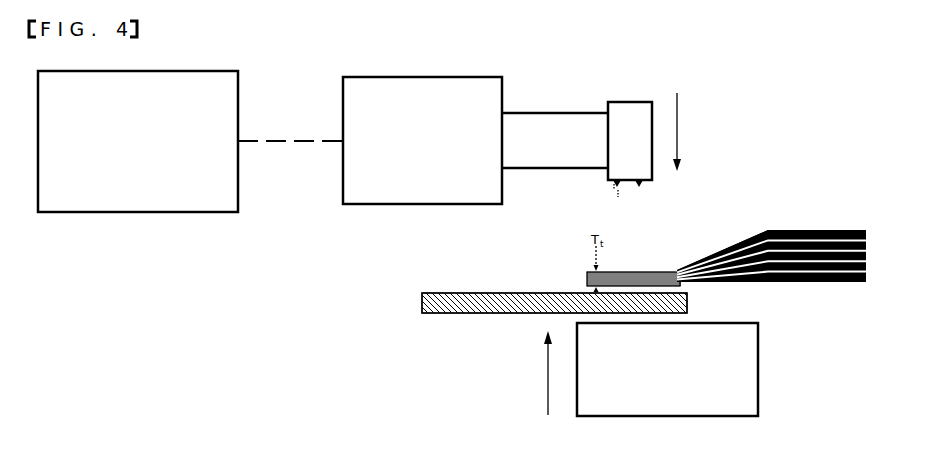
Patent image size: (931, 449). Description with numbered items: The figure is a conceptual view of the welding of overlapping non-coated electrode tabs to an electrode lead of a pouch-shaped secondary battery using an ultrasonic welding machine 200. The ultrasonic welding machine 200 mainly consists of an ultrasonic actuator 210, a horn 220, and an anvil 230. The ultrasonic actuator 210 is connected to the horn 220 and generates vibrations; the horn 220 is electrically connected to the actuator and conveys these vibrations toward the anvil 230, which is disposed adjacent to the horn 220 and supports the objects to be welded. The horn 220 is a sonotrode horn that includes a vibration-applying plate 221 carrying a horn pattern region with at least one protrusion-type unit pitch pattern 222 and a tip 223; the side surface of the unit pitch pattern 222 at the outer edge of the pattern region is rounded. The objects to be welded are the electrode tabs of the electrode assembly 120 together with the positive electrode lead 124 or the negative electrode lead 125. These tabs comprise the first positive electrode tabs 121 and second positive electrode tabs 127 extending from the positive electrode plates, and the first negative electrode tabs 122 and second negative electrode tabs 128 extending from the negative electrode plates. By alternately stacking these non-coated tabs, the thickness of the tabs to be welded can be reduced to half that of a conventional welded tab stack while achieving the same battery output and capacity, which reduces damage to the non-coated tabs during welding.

The ultrasonic actuator 210 is at (246, 174).
The ultrasonic welding machine 200 is at (417, 213).
The horn 220 is at (660, 133).
The vibration-applying plate 221 is at (654, 182).
The unit pitch pattern 222 is at (614, 184).
The tip 223 is at (612, 198).
The electrode assembly 120 is at (771, 249).
The first positive electrode tabs 121 is at (697, 250).
The first negative electrode tabs 122 is at (762, 232).
The second positive electrode tabs 127 is at (653, 264).
The second negative electrode tabs 128 is at (762, 283).
The positive electrode lead 124 is at (686, 307).
The negative electrode lead 125 is at (601, 308).
The anvil 230 is at (765, 371).